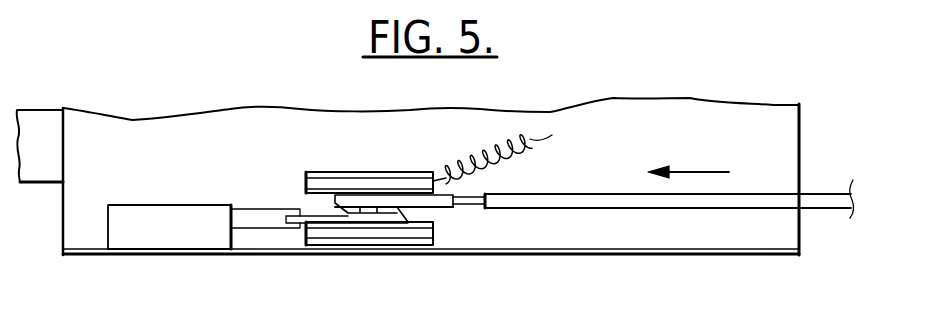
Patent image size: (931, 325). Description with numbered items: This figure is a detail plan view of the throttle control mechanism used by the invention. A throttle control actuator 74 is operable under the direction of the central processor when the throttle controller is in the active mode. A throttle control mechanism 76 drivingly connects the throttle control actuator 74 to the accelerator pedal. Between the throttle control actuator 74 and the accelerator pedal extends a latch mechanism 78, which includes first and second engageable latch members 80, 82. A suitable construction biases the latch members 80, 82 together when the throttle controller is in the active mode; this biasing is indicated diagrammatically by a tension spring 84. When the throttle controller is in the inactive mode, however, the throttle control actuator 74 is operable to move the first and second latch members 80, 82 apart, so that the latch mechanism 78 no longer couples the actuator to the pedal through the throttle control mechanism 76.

The throttle control actuator 74 is at (135, 203).
The throttle control mechanism 76 is at (592, 150).
The latch mechanism 78 is at (390, 165).
The first latch member 80 is at (322, 180).
The second latch member 82 is at (327, 235).
The tension spring 84 is at (513, 156).